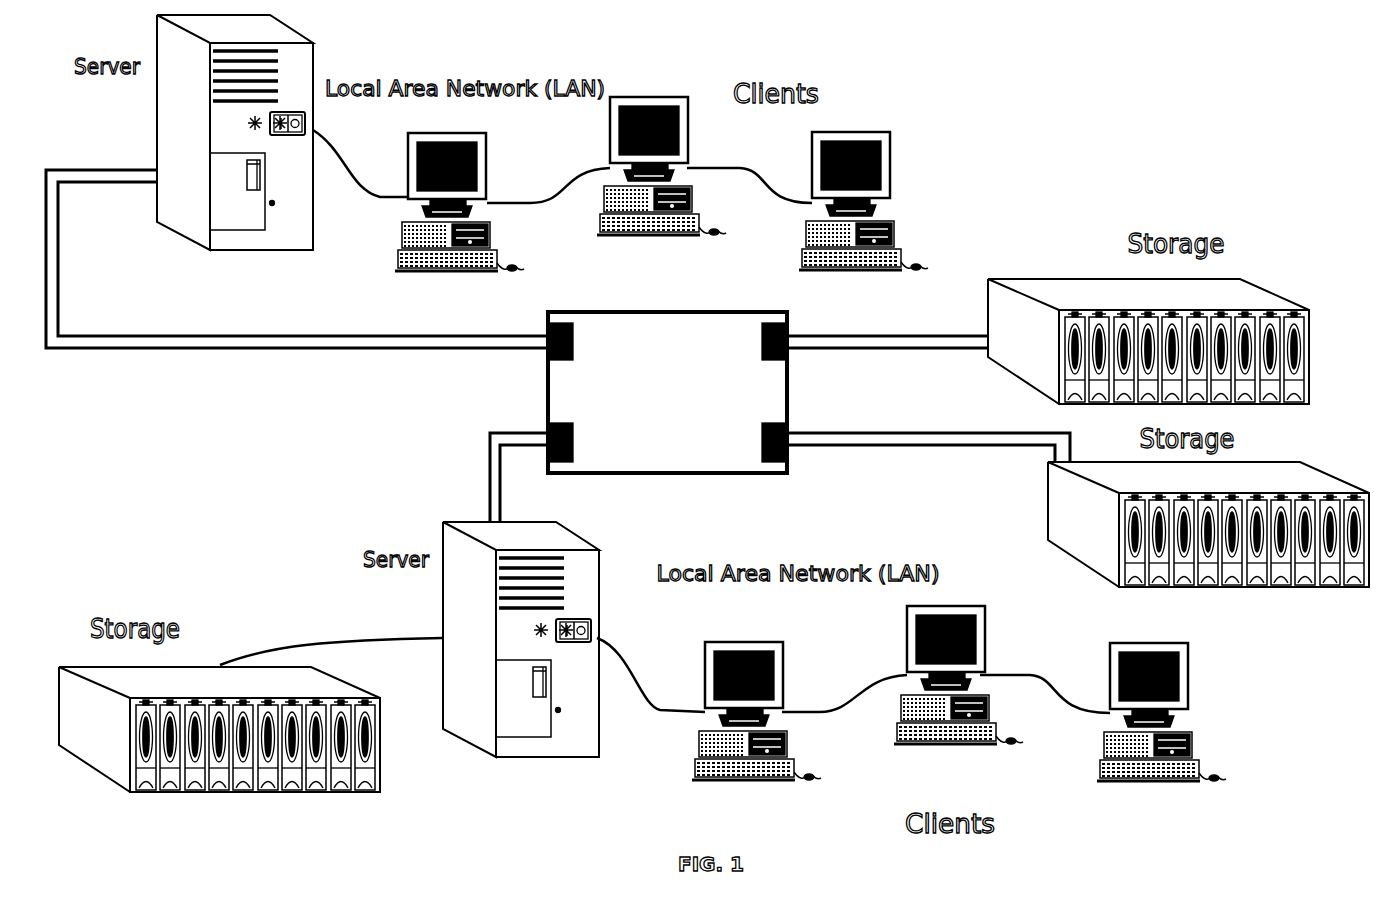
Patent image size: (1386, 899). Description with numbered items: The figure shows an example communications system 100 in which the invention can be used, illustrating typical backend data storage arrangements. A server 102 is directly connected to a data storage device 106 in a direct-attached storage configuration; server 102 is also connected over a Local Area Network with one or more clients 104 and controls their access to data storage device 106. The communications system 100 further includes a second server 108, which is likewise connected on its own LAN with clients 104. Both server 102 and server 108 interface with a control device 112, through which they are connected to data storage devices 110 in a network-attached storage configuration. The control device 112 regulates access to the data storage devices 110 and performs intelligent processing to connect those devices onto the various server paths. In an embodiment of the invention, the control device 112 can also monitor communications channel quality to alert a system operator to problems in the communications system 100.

The communications system 100 is at (1198, 105).
The server 102 is at (530, 760).
The client 104 is at (448, 274).
The data storage device 106 is at (73, 664).
The server 108 is at (248, 253).
The data storage device 110 is at (1072, 277).
The control device 112 is at (545, 397).